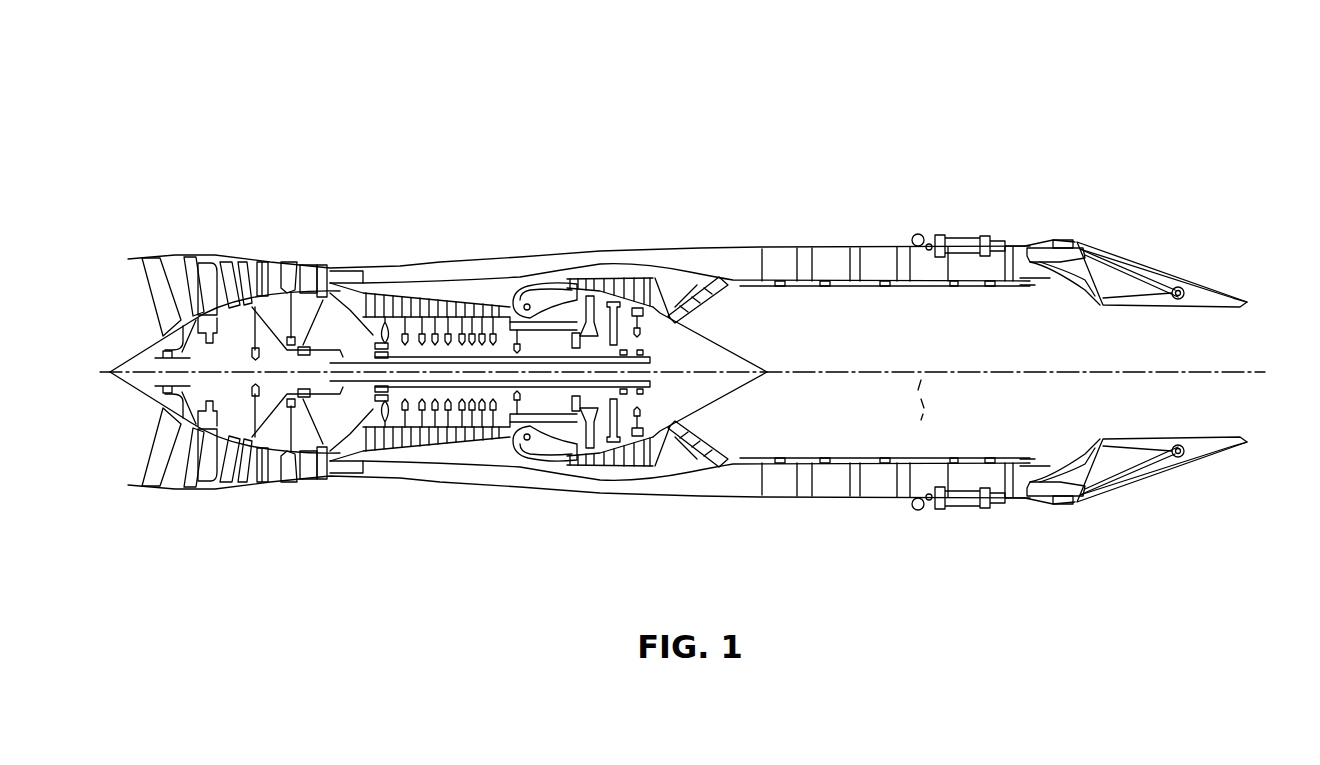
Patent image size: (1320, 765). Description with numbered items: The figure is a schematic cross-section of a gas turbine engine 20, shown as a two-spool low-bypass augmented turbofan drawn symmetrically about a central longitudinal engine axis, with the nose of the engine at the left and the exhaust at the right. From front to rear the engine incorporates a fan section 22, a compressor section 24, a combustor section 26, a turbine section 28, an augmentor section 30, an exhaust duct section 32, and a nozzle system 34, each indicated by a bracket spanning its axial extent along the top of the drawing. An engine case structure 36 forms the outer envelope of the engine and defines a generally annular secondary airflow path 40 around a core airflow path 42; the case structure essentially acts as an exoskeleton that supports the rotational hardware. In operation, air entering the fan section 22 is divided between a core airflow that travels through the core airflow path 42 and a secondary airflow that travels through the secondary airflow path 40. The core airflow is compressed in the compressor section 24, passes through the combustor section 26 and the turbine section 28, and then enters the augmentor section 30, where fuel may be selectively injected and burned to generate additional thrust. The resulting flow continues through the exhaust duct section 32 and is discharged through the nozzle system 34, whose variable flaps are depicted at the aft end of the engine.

The gas turbine engine 20 is at (682, 303).
The fan section 22 is at (323, 190).
The compressor section 24 is at (520, 190).
The combustor section 26 is at (585, 190).
The turbine section 28 is at (585, 190).
The augmentor section 30 is at (655, 190).
The exhaust duct section 32 is at (1022, 190).
The nozzle system 34 is at (1022, 190).
The engine case structure 36 is at (615, 497).
The secondary airflow path 40 is at (400, 470).
The core airflow path 42 is at (324, 472).